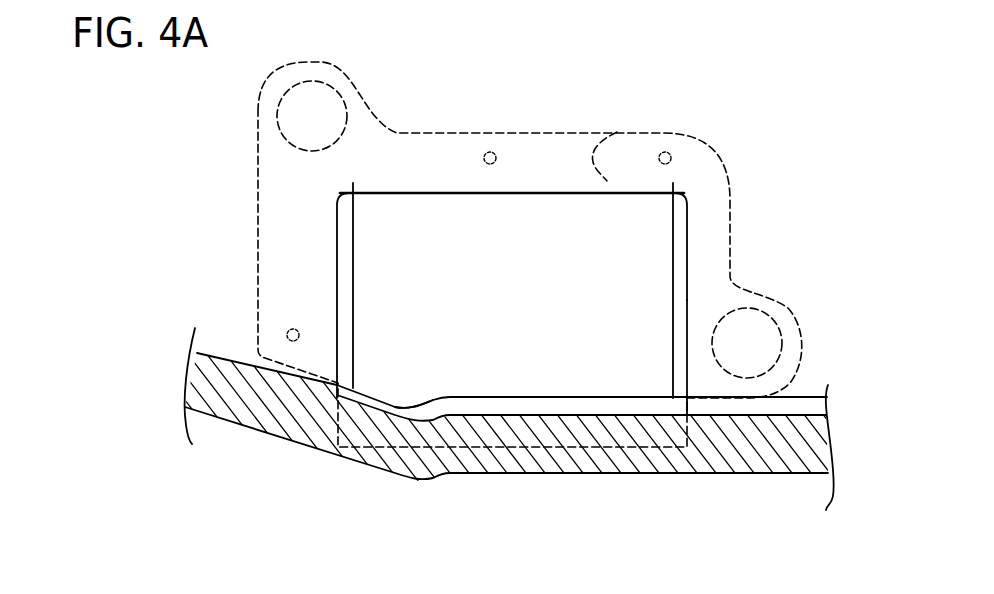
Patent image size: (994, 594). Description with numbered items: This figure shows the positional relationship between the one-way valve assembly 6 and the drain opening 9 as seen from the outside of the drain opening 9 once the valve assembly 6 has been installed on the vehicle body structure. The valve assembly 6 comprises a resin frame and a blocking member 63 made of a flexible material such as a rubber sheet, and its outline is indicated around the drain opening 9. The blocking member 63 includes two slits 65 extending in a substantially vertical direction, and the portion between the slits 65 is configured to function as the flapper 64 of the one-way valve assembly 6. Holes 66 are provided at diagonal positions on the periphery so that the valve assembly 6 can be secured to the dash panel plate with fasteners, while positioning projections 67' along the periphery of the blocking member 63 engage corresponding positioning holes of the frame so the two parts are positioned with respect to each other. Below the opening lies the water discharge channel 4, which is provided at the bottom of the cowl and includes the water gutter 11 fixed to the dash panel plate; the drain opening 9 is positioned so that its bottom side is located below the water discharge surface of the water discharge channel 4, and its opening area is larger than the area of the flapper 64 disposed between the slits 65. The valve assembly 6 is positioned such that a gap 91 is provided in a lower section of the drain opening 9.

The water discharge channel 4 is at (428, 419).
The one-way valve assembly 6 is at (671, 81).
The drain opening 9 is at (437, 193).
The water gutter 11 is at (462, 478).
The blocking member 63 is at (677, 295).
The flapper 64 is at (560, 240).
The slits 65 is at (353, 319).
The holes 66 is at (305, 97).
The positioning projections 67' is at (483, 201).
The gap 91 is at (569, 408).